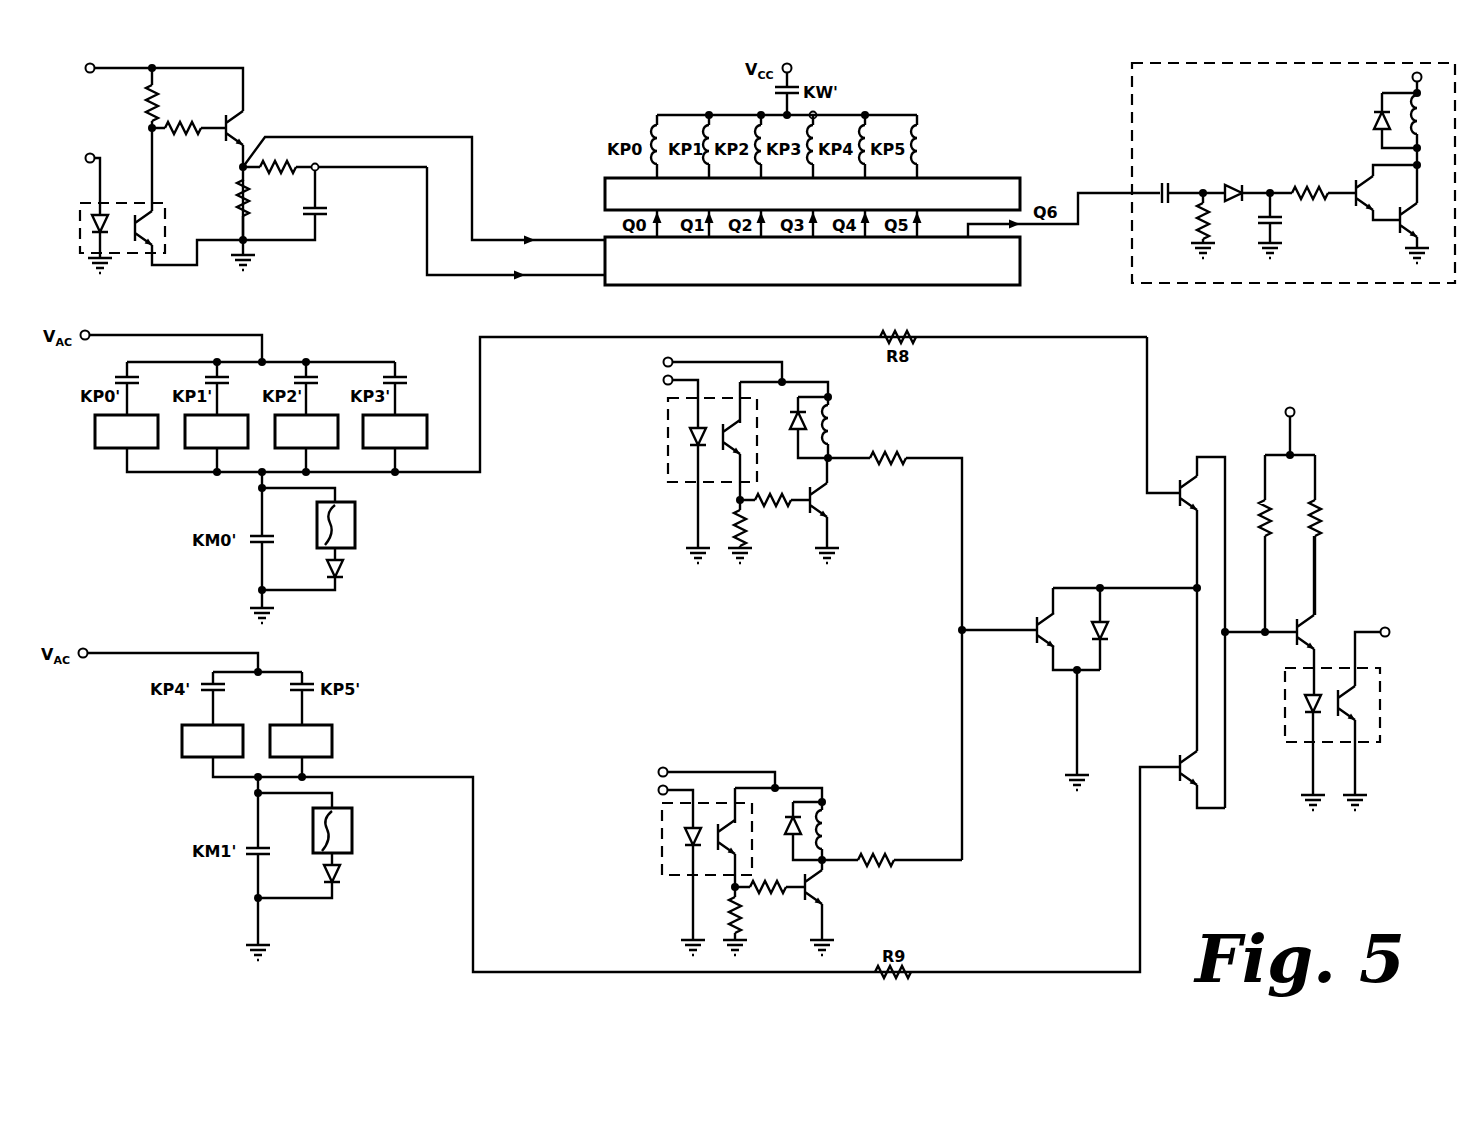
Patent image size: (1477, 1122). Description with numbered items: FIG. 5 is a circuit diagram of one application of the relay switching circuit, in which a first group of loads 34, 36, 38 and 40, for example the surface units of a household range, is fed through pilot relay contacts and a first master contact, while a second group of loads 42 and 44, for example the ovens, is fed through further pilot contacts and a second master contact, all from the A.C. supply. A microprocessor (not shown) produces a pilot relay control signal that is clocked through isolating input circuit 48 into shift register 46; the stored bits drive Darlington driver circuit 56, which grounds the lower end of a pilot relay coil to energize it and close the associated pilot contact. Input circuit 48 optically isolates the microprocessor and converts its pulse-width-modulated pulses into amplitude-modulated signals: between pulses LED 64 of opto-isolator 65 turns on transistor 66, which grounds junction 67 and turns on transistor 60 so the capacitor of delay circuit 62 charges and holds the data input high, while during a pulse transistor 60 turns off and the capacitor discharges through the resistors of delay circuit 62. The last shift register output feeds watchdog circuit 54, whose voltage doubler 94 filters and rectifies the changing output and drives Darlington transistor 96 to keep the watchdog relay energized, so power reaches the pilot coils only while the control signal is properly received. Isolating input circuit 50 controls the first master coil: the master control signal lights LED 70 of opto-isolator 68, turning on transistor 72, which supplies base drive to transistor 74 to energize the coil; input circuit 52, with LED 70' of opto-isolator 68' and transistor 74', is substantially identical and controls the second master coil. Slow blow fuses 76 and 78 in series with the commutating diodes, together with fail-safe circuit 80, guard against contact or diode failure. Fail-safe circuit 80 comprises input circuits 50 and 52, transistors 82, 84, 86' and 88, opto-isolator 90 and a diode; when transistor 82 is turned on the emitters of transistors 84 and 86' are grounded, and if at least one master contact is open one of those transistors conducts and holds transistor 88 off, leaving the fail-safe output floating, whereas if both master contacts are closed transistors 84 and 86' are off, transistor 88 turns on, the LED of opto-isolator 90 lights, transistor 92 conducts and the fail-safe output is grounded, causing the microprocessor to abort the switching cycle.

The isolating input circuit 48 is at (323, 170).
The transistor 60 is at (248, 130).
The delay circuit 62 is at (340, 212).
The LED 64 is at (92, 229).
The opto-isolator 65 is at (142, 200).
The transistor 66 is at (142, 226).
The junction 67 is at (148, 128).
The shift register 46 is at (605, 232).
The Darlington driver circuit 56 is at (990, 180).
The watchdog circuit 54 is at (1132, 86).
The voltage doubler 94 is at (1276, 143).
The Darlington transistor 96 is at (1405, 224).
The load 34 is at (102, 448).
The load 36 is at (198, 446).
The load 38 is at (326, 444).
The load 40 is at (424, 444).
The slow blow fuse 76 is at (358, 526).
The load 42 is at (182, 738).
The load 44 is at (332, 745).
The slow blow fuse 78 is at (355, 833).
The isolating input circuit 50 is at (792, 607).
The isolating input circuit 52 is at (789, 856).
The opto-isolator 68 is at (708, 480).
The LED 70 is at (667, 493).
The transistor 72 is at (743, 448).
The transistor 74 is at (839, 510).
The opto-isolator 68' is at (684, 879).
The LED 70' is at (661, 889).
The transistor 74' is at (837, 907).
The fail-safe circuit 80 is at (1188, 588).
The transistor 82 is at (1028, 665).
The transistor 84 is at (1188, 506).
The transistor 86' is at (1190, 713).
The transistor 88 is at (1316, 626).
The opto-isolator 90 is at (1334, 716).
The transistor 92 is at (1359, 704).